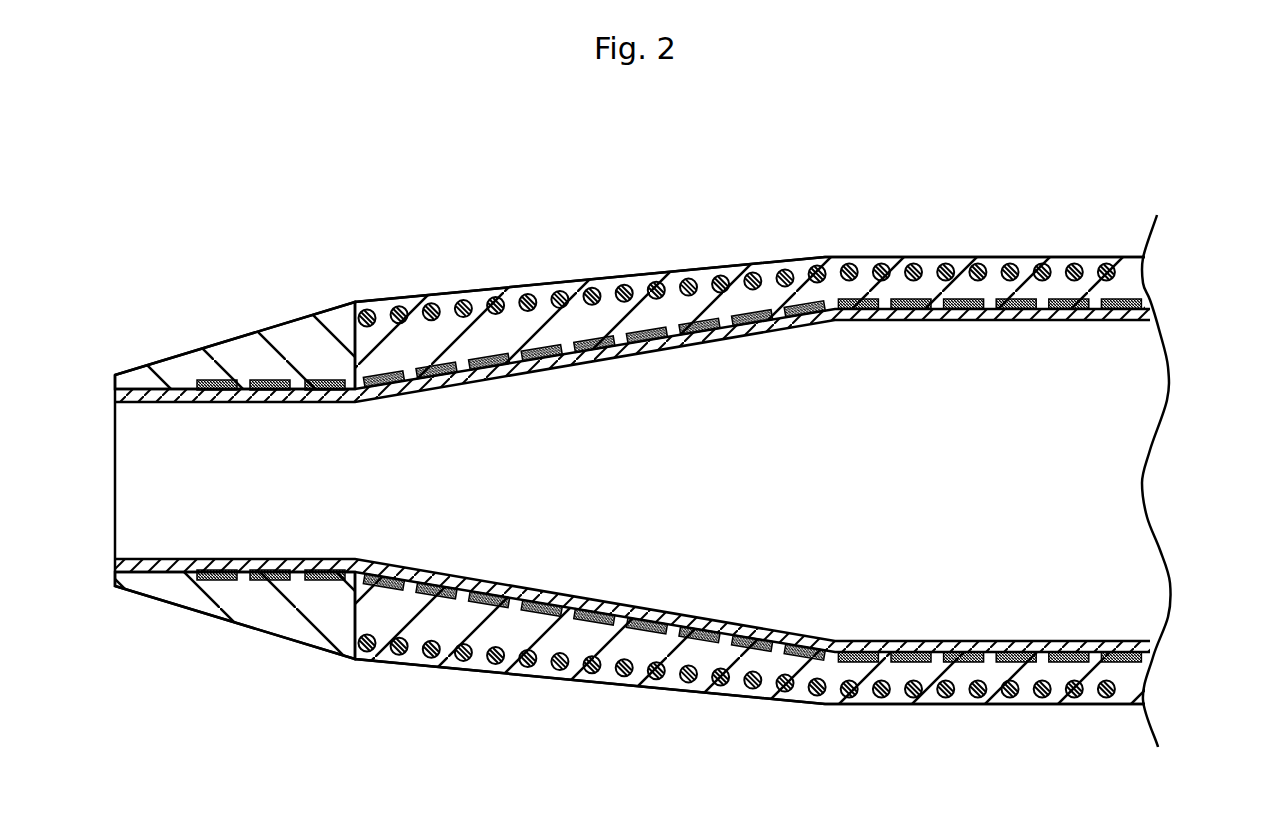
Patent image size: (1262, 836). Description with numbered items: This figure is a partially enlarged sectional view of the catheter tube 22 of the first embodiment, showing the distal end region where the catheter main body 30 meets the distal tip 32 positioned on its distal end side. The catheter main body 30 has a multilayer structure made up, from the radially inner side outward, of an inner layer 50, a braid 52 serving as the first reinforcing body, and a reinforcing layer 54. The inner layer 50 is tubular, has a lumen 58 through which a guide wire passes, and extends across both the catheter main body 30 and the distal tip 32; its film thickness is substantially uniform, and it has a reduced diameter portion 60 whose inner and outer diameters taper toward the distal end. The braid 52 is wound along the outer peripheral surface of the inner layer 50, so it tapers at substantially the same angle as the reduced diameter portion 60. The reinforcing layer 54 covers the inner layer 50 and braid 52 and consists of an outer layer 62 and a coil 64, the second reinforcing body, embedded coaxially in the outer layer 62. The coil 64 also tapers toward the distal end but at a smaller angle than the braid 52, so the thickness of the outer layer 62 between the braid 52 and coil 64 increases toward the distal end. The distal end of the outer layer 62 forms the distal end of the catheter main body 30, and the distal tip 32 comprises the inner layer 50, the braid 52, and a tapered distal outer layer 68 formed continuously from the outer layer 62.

The catheter tube 22 is at (395, 146).
The catheter main body 30 is at (802, 204).
The distal tip 32 is at (178, 323).
The inner layer 50 is at (1043, 310).
The braid 52 is at (383, 392).
The reinforcing layer 54 is at (1130, 171).
The lumen 58 is at (1092, 461).
The reduced diameter portion 60 is at (588, 350).
The outer layer 62 is at (1128, 275).
The coil 64 is at (1073, 266).
The distal outer layer 68 is at (247, 352).